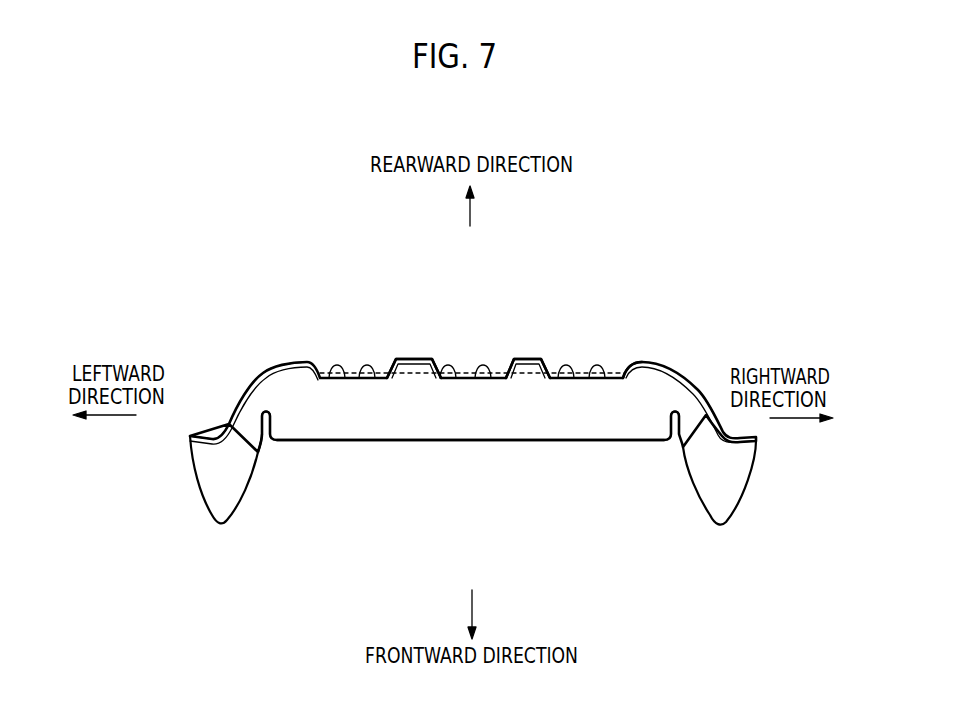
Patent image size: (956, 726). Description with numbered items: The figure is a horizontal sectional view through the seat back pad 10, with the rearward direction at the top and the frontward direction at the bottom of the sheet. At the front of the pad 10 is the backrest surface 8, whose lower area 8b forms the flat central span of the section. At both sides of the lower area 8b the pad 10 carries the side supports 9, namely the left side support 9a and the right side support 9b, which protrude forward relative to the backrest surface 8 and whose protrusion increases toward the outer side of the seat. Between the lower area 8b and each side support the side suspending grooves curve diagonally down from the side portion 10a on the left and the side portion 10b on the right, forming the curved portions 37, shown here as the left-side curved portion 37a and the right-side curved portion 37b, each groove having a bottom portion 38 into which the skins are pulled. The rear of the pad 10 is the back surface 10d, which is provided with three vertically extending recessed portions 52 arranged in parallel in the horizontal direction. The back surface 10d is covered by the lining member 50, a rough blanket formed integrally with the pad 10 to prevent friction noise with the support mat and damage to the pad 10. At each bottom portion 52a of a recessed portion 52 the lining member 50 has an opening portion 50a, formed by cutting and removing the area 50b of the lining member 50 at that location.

The pad 10 is at (239, 546).
The side portion 10a is at (196, 460).
The side portion 10b is at (748, 484).
The back surface 10d is at (274, 372).
The bottom portion 38 is at (264, 411).
The lining member 50 is at (201, 438).
The opening portion 50a is at (386, 380).
The area 50b is at (352, 374).
The recessed portion 52 is at (338, 372).
The bottom portion 52a is at (388, 380).
The backrest surface 8 is at (470, 489).
The lower area 8b is at (510, 442).
The side support 9 is at (465, 510).
The left side support 9a is at (206, 500).
The right side support 9b is at (737, 506).
The curved portion 37 is at (485, 488).
The left-side curved portion 37a is at (258, 428).
The right-side curved portion 37b is at (683, 428).